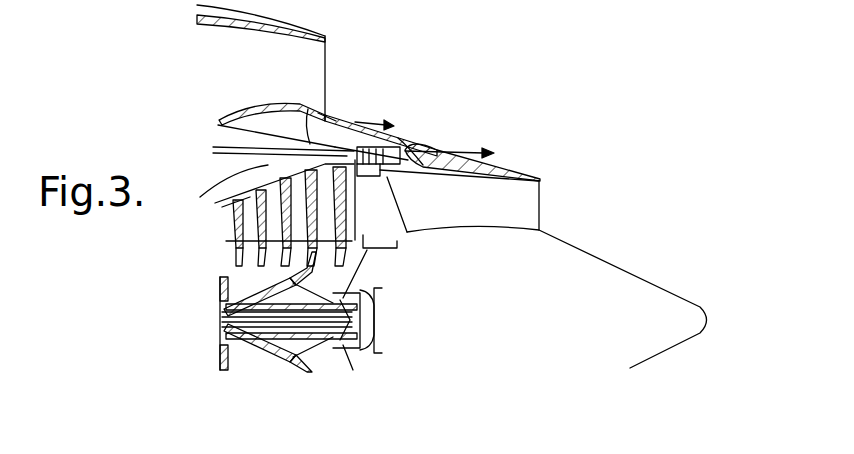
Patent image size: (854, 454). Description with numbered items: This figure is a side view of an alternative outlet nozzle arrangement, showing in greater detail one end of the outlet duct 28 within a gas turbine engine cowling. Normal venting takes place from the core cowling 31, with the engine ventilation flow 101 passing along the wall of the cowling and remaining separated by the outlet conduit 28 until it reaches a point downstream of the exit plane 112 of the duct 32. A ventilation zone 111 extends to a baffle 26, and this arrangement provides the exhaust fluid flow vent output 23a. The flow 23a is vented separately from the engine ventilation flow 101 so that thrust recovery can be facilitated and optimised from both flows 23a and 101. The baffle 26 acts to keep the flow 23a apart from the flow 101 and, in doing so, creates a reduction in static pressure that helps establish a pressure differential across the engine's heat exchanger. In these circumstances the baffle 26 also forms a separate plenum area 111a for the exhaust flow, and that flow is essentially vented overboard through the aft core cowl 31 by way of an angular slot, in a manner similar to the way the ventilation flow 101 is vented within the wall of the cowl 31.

The duct 32 is at (240, 73).
The exit plane 112 is at (326, 63).
The core cowling 31 is at (284, 108).
The outlet duct 28 is at (328, 113).
The engine ventilation flow 101 is at (340, 110).
The plenum area 111a is at (400, 148).
The exhaust fluid flow vent output 23a is at (430, 146).
The ventilation zone 111 is at (230, 176).
The baffle 26 is at (387, 170).